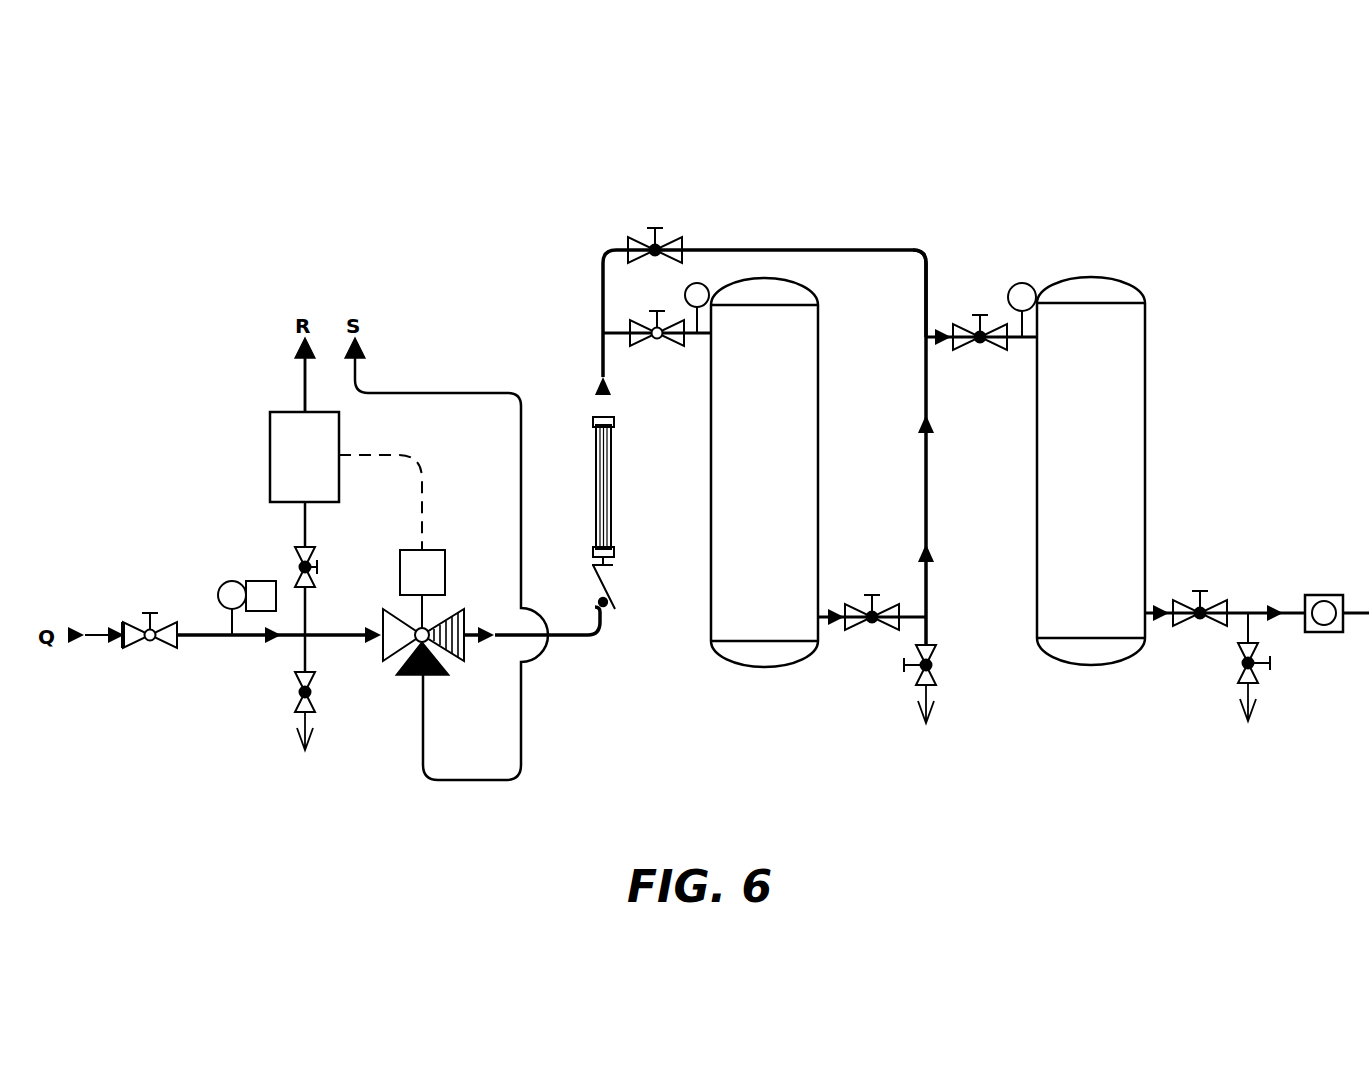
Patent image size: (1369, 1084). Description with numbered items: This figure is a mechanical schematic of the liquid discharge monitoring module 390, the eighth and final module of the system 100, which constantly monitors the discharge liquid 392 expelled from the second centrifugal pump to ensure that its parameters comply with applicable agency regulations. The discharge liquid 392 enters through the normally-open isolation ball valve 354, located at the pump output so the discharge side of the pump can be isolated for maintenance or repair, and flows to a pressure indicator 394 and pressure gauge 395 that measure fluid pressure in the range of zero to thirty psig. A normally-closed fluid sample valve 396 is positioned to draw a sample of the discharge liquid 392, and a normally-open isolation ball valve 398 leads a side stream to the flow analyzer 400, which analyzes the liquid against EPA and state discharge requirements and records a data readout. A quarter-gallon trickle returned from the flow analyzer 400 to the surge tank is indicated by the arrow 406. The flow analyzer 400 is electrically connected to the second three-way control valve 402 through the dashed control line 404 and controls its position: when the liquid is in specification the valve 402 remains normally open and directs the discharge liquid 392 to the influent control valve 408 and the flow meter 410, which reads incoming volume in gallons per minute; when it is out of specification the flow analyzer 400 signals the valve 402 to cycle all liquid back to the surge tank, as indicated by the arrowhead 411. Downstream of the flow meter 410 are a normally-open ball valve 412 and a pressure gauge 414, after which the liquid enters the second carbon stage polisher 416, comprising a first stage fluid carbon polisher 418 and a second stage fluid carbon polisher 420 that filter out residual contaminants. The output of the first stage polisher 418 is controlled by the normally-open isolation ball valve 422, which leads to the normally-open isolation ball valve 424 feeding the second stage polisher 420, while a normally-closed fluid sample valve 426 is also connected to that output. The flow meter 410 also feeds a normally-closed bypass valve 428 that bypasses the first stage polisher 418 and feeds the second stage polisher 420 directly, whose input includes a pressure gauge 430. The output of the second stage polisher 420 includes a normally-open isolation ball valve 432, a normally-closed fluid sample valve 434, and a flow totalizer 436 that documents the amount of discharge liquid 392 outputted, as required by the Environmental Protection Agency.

The water treatment system 100 is at (1131, 192).
The normally-open isolation ball valve 354 is at (133, 645).
The liquid discharge monitoring module 390 is at (362, 292).
The discharge liquid 392 is at (97, 633).
The pressure indicator 394 is at (230, 582).
The pressure gauge 395 is at (258, 580).
The normally-closed fluid sample valve 396 is at (297, 692).
The normally-open isolation ball valve 398 is at (312, 558).
The flow analyzer 400 is at (285, 452).
The second three-way control valve 402 is at (408, 677).
The dashed control line 404 is at (412, 462).
The arrow 406 is at (305, 383).
The influent control valve 408 is at (612, 618).
The flow meter 410 is at (612, 485).
The arrowhead 411 is at (437, 393).
The normally-open ball valve 412 is at (638, 345).
The pressure gauge 414 is at (705, 284).
The second carbon stage polisher 416 is at (932, 256).
The first stage fluid carbon polisher 418 is at (818, 478).
The second stage fluid carbon polisher 420 is at (1145, 476).
The normally-open isolation ball valve 422 is at (848, 631).
The normally-open isolation ball valve 424 is at (965, 352).
The normally-closed fluid sample valve 426 is at (935, 683).
The normally-closed bypass valve 428 is at (640, 240).
The pressure gauge 430 is at (1032, 286).
The normally-open isolation ball valve 432 is at (1210, 600).
The normally-closed fluid sample valve 434 is at (1238, 678).
The flow totalizer 436 is at (1320, 595).